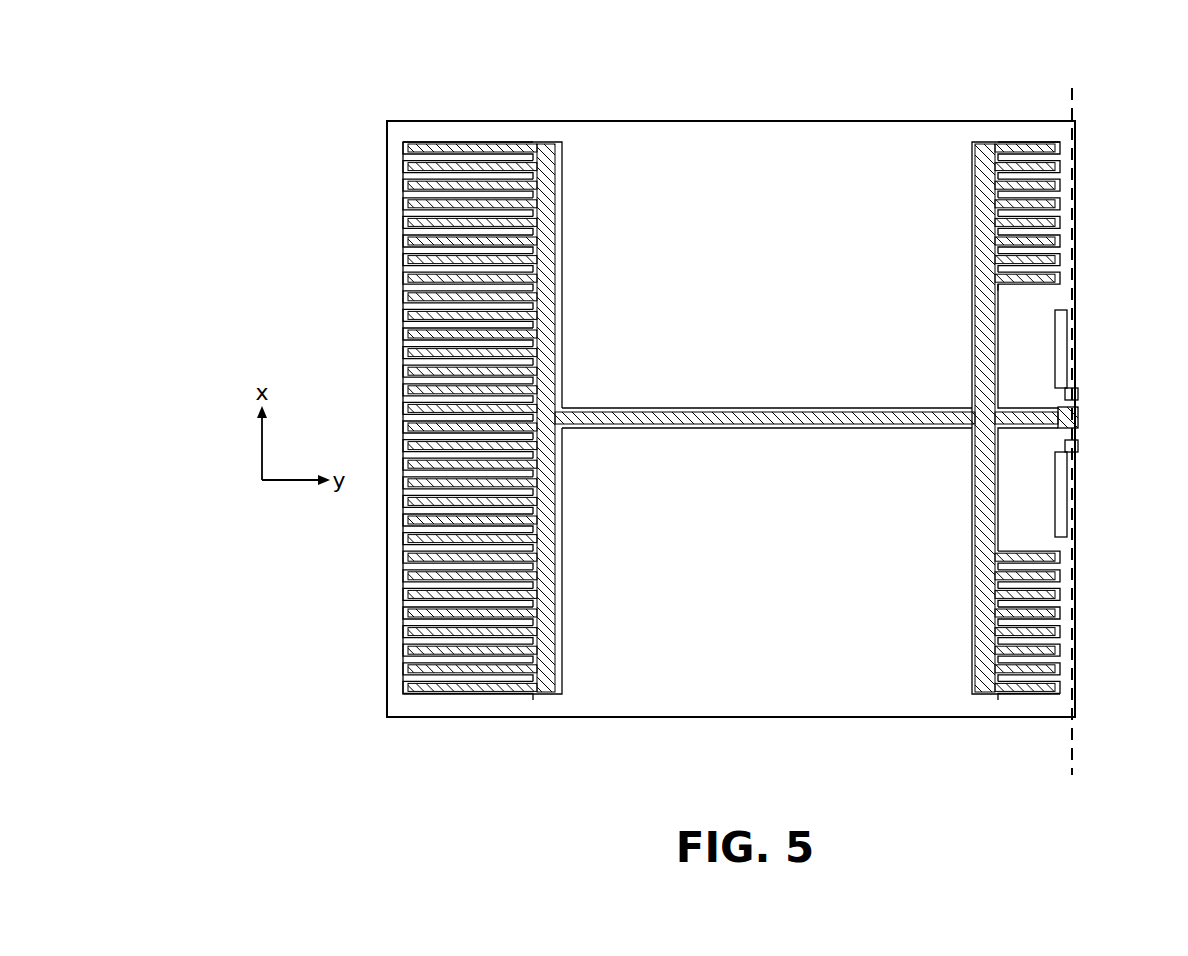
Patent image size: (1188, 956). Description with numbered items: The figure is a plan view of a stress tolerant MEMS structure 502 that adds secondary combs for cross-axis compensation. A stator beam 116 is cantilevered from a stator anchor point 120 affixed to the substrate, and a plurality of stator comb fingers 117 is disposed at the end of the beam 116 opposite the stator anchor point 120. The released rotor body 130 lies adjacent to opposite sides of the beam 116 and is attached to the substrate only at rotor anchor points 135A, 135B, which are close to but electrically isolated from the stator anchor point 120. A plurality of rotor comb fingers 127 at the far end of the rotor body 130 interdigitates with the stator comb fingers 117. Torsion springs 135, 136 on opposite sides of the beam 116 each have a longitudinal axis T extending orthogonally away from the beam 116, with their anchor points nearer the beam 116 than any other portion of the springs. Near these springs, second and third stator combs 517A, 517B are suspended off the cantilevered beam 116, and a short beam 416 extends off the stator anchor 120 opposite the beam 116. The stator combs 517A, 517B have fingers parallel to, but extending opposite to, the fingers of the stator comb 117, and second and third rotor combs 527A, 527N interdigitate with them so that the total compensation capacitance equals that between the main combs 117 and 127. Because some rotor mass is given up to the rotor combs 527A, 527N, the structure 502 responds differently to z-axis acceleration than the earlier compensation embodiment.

The MEMS structure 502 is at (266, 170).
The stator comb fingers 117 is at (555, 118).
The rotor comb fingers 127 is at (533, 717).
The beam 116 is at (640, 424).
The rotor body 130 is at (688, 279).
The beam 416 is at (1051, 418).
The second rotor comb 527A is at (912, 118).
The third rotor comb 527N is at (935, 717).
The second stator comb 517A is at (1060, 148).
The third stator comb 517B is at (1028, 678).
The stator anchor point 120 is at (1079, 413).
The torsion spring 135 is at (1068, 345).
The rotor anchor point 135A is at (1079, 392).
The rotor anchor point 135B is at (1079, 449).
The torsion spring 136 is at (1067, 512).
The longitudinal axis T is at (1068, 444).